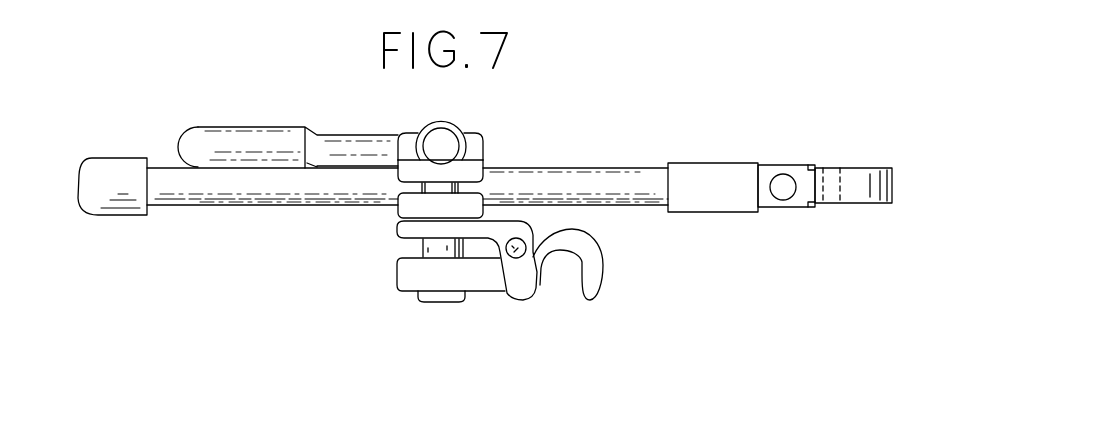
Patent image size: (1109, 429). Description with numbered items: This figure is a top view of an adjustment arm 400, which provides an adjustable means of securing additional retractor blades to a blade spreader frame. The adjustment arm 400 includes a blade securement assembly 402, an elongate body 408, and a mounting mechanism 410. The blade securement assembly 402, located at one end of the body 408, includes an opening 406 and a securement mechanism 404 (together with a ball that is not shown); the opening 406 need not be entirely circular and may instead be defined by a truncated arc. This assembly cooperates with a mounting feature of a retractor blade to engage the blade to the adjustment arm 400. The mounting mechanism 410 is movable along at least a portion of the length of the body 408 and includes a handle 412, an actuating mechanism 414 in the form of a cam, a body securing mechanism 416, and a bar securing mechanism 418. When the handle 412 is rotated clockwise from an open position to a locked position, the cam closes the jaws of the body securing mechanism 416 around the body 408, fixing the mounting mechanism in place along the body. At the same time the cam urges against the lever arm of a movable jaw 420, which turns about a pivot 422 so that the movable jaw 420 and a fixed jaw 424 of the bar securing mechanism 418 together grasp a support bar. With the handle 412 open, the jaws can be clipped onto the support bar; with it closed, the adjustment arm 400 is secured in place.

The adjustment arm 400 is at (757, 120).
The blade securement assembly 402 is at (857, 228).
The securement mechanism 404 is at (783, 200).
The opening 406 is at (851, 151).
The body 408 is at (613, 167).
The mounting mechanism 410 is at (456, 107).
The handle 412 is at (250, 127).
The actuating mechanism 414 is at (455, 154).
The body securing mechanism 416 is at (391, 193).
The bar securing mechanism 418 is at (556, 295).
The movable jaw 420 is at (510, 298).
The pivot 422 is at (522, 254).
The fixed jaw 424 is at (600, 292).